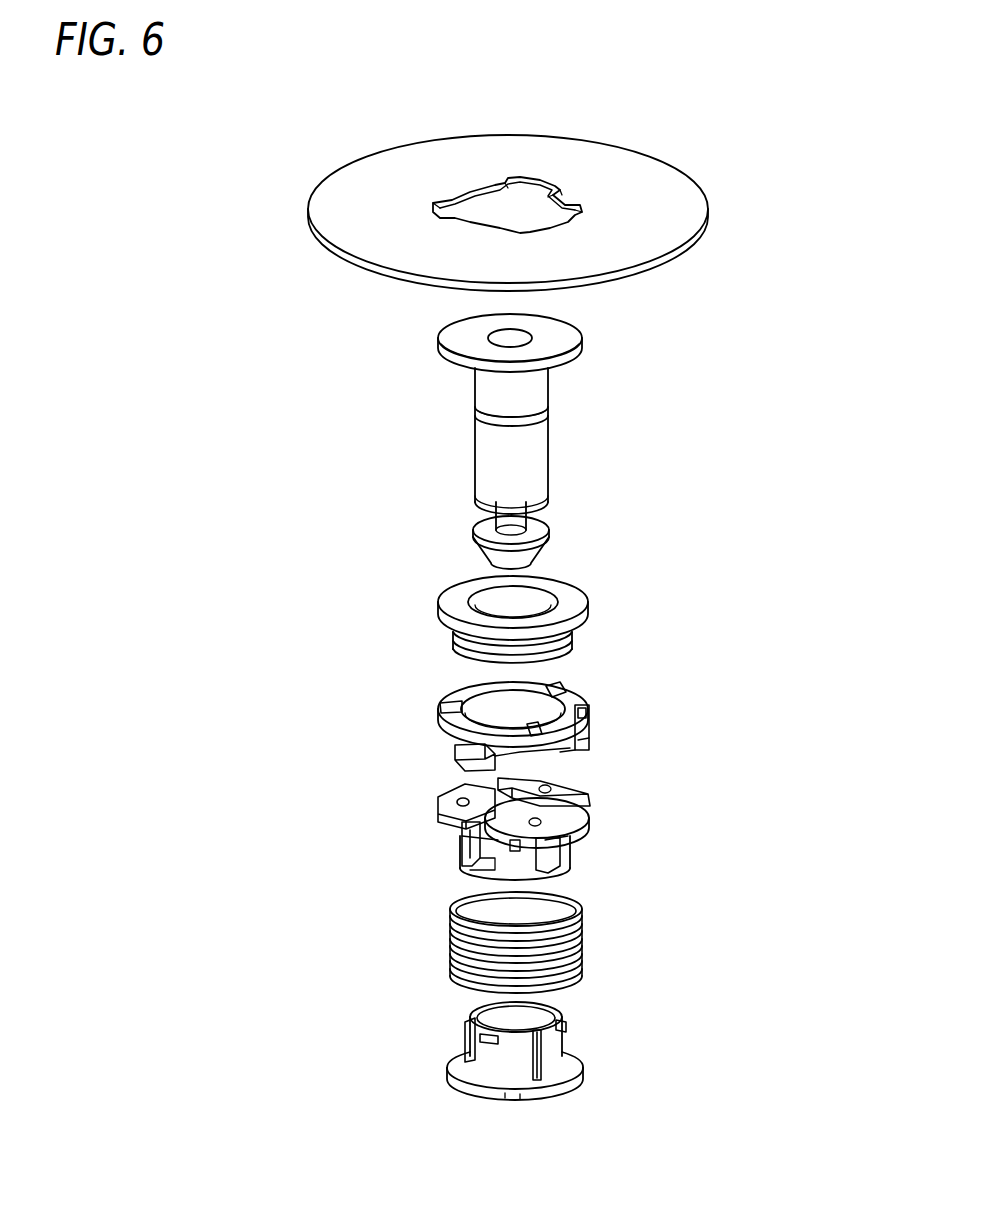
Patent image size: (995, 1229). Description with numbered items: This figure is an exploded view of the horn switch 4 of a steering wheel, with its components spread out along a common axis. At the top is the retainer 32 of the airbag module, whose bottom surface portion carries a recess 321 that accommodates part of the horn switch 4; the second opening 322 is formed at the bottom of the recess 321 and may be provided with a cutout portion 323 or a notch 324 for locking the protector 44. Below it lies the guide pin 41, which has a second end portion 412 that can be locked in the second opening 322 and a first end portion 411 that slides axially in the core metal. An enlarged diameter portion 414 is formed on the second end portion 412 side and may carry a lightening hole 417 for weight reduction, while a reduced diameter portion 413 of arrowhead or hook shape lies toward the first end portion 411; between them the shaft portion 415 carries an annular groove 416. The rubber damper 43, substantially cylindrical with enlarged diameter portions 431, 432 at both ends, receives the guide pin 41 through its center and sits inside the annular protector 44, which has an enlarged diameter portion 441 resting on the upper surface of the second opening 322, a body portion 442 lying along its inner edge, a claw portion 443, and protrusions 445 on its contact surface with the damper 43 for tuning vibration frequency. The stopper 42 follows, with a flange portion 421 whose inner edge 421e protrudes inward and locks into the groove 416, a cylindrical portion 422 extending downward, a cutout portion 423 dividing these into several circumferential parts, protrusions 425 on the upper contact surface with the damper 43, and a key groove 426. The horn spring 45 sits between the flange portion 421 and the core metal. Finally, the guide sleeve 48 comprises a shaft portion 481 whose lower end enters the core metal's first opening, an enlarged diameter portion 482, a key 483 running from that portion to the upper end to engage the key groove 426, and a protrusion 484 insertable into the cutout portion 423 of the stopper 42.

The horn switch 4 is at (714, 104).
The retainer 32 is at (331, 198).
The recess 321 is at (608, 186).
The second opening 322 is at (470, 190).
The cutout portion 323 is at (536, 180).
The notch 324 is at (598, 211).
The guide pin 41 is at (511, 437).
The first end portion 411 is at (560, 520).
The second end portion 412 is at (592, 338).
The reduced diameter portion 413 is at (495, 517).
The enlarged diameter portion 414 is at (440, 347).
The shaft portion 415 is at (478, 385).
The annular groove 416 is at (480, 412).
The lightening hole 417 is at (490, 336).
The damper 43 is at (514, 619).
The enlarged diameter portion 431 is at (440, 613).
The enlarged diameter portion 432 is at (575, 647).
The protector 44 is at (521, 712).
The enlarged diameter portion 441 is at (455, 690).
The body portion 442 is at (547, 758).
The claw portion 443 is at (455, 752).
The protrusions 445 is at (560, 686).
The stopper 42 is at (515, 825).
The flange portion 421 is at (440, 809).
The inner edge 421e is at (500, 782).
The cylindrical portion 422 is at (560, 848).
The cutout portion 423 is at (466, 848).
The protrusions 425 is at (455, 800).
The key groove 426 is at (555, 870).
The horn spring 45 is at (584, 945).
The guide sleeve 48 is at (507, 1043).
The shaft portion 481 is at (550, 1052).
The enlarged diameter portion 482 is at (448, 1070).
The key 483 is at (465, 1030).
The protrusion 484 is at (567, 1027).